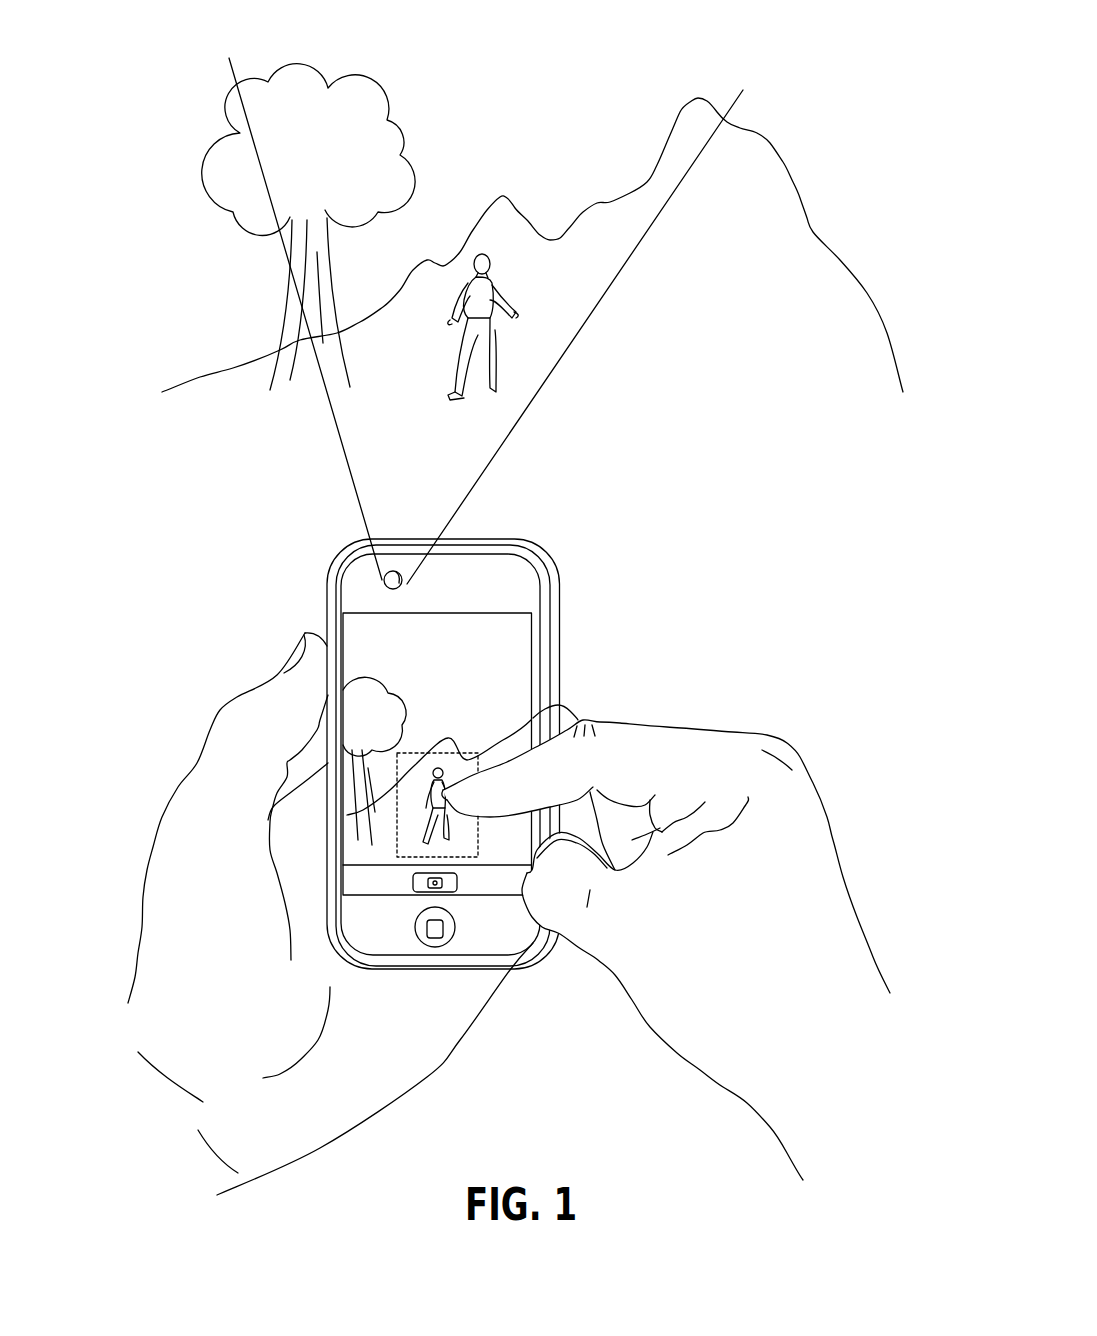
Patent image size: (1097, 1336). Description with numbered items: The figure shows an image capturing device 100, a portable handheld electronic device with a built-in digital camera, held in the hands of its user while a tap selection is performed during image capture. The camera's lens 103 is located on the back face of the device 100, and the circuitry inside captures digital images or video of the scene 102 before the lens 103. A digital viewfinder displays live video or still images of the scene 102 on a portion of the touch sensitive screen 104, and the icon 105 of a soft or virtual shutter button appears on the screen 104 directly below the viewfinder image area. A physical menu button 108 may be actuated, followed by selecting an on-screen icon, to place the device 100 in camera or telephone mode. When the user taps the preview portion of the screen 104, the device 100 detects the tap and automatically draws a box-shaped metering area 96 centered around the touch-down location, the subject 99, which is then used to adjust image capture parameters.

The image capturing device 100 is at (348, 543).
The scene 102 is at (779, 440).
The lens 103 is at (386, 588).
The touch sensitive screen 104 is at (330, 847).
The shutter button icon 105 is at (413, 883).
The physical menu button 108 is at (435, 942).
The metering area 96 is at (410, 752).
The subject 99 is at (427, 840).